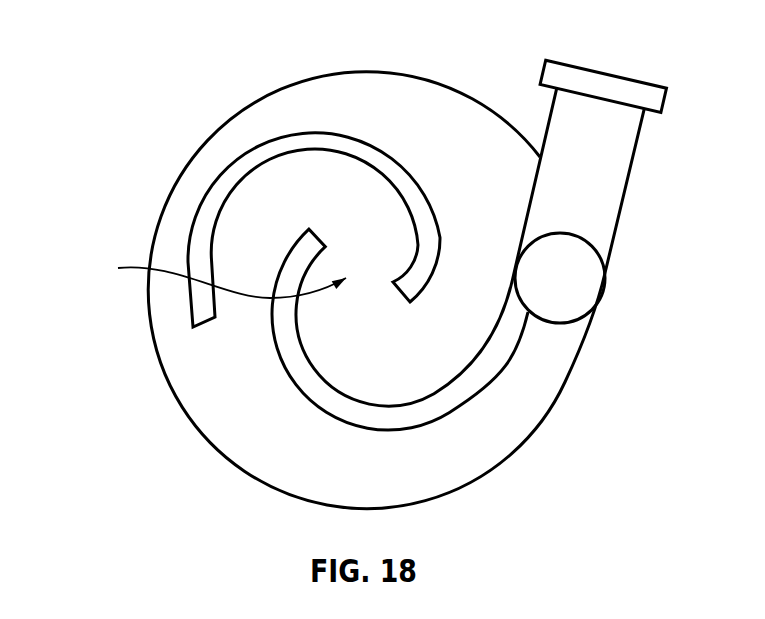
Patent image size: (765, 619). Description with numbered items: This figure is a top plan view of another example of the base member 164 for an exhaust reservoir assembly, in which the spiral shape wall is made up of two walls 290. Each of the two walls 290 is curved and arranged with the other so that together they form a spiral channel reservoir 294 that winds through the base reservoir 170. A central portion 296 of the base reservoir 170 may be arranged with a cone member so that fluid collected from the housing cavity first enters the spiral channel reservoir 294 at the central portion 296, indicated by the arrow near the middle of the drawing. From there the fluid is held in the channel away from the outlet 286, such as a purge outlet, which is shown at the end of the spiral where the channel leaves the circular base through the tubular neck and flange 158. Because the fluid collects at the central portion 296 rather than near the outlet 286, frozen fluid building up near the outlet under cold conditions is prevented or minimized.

The outlet flange 158 is at (614, 74).
The base member 164 is at (235, 112).
The base reservoir 170 is at (250, 445).
The outlet 286 is at (602, 254).
The walls 290 is at (208, 217).
The spiral channel reservoir 294 is at (164, 372).
The central portion 296 is at (206, 277).